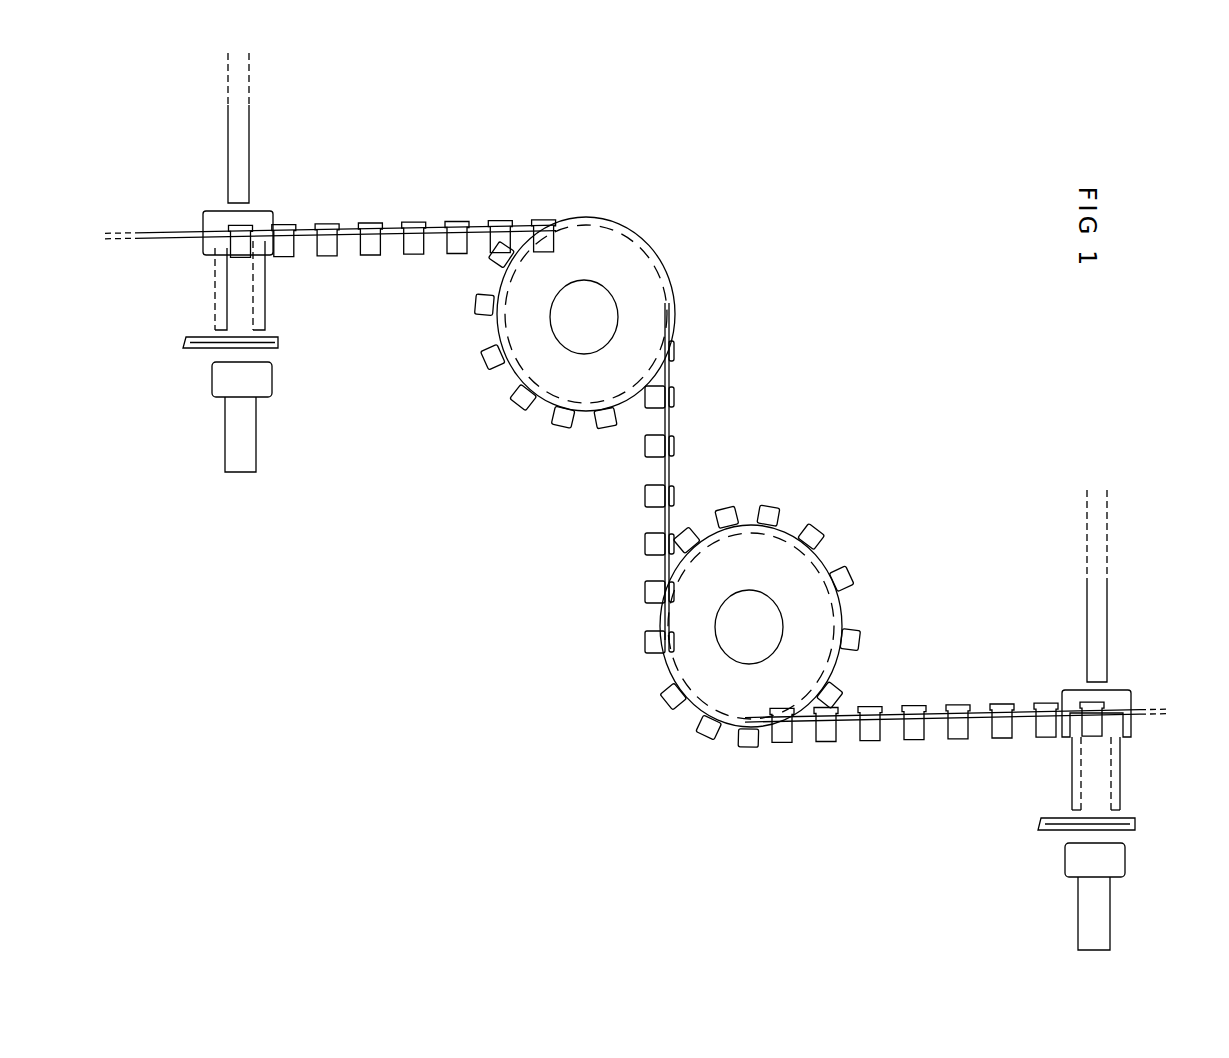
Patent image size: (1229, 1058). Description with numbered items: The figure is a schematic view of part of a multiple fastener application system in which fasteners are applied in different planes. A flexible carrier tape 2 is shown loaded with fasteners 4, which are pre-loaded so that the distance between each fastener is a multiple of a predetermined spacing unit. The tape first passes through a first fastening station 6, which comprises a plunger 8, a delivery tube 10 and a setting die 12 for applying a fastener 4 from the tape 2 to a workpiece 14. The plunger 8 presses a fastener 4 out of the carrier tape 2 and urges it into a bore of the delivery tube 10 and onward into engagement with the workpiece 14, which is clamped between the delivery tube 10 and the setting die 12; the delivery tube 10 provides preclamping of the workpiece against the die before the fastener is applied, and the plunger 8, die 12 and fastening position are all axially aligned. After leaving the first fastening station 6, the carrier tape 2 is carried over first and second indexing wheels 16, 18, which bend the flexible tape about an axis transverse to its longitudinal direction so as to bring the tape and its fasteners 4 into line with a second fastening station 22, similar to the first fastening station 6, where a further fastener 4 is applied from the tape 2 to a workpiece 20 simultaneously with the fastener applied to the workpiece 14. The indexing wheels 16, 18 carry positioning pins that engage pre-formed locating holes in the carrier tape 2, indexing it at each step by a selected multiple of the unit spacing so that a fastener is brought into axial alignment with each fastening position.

The flexible carrier tape 2 is at (133, 241).
The fasteners 4 is at (323, 232).
The first fastening station 6 is at (263, 218).
The plunger 8 is at (242, 117).
The delivery tube 10 is at (260, 292).
The setting die 12 is at (258, 377).
The workpiece 14 is at (192, 350).
The first indexing wheel 16 is at (537, 348).
The second indexing wheel 18 is at (695, 652).
The workpiece 20 is at (1132, 822).
The second fastening station 22 is at (1120, 697).